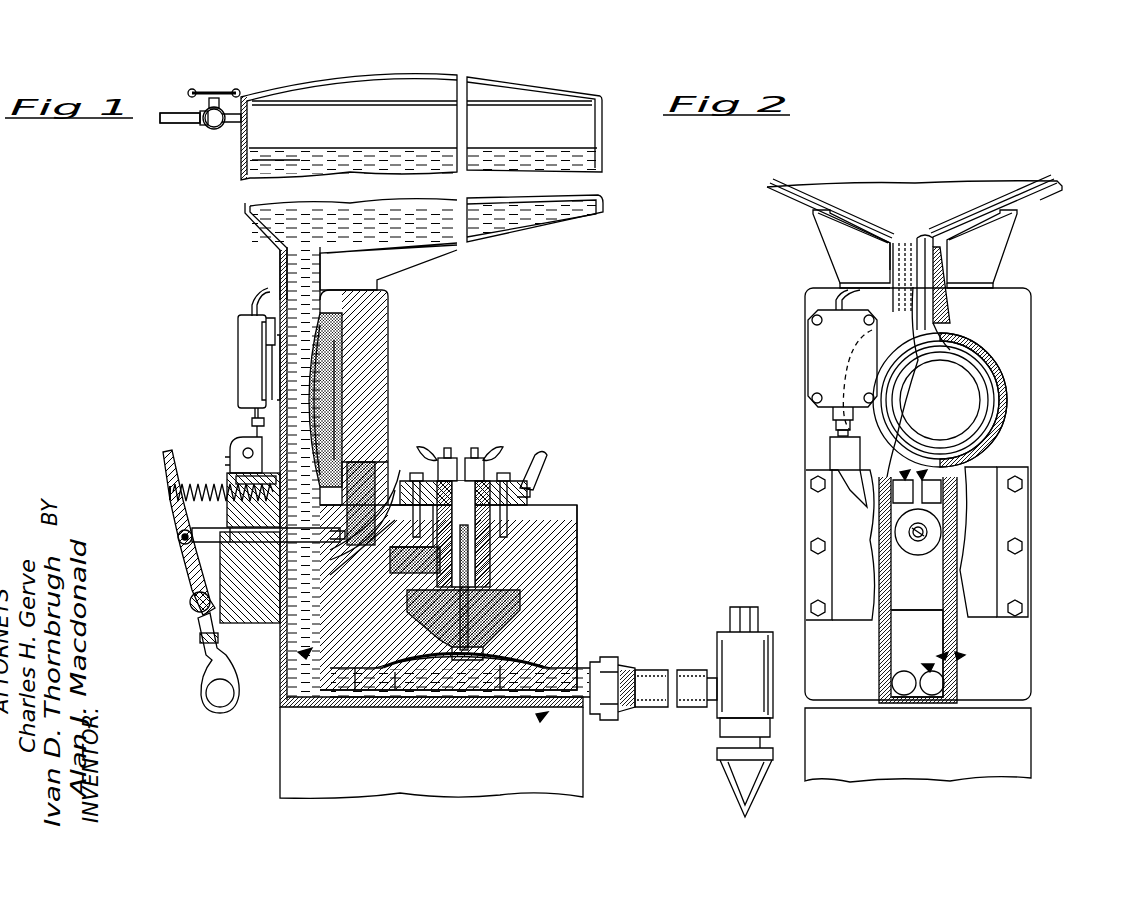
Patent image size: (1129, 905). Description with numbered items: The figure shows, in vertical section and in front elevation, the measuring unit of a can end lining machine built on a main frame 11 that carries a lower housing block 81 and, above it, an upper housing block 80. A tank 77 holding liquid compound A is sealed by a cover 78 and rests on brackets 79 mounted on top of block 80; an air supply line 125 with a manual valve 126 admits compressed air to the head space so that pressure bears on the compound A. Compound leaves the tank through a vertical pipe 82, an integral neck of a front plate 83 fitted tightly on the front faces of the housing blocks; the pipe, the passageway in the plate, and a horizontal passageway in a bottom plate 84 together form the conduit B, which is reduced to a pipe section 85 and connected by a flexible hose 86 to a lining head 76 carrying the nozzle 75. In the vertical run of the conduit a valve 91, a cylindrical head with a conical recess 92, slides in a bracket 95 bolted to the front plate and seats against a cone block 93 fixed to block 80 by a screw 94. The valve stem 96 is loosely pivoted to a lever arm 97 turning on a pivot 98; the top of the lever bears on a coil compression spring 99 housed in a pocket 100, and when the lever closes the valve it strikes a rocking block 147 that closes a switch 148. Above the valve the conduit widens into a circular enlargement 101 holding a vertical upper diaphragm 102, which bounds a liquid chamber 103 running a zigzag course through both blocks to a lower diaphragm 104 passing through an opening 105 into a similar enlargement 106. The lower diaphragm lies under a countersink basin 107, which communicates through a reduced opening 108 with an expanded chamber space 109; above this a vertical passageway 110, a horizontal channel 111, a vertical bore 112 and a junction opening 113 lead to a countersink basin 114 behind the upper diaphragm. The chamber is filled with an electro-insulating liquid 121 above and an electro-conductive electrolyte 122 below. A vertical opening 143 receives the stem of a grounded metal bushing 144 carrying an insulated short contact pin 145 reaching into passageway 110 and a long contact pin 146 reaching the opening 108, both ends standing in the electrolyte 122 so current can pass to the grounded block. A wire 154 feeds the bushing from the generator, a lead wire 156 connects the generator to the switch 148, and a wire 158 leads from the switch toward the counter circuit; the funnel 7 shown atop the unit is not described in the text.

In FIG. 2, the funnel 7 is at (928, 200).
In FIG. 1, the main frame 11 is at (293, 765).
In FIG. 2, the main frame 11 is at (1000, 768).
In FIG. 1, the nozzle 75 is at (742, 783).
In FIG. 1, the lining head 76 is at (745, 683).
In FIG. 1, the tank 77 is at (600, 130).
In FIG. 1, the cover 78 is at (280, 93).
In FIG. 1, the brackets 79 is at (423, 253).
In FIG. 2, the brackets 79 is at (850, 254).
In FIG. 1, the upper housing block 80 is at (378, 316).
In FIG. 2, the upper housing block 80 is at (903, 575).
In FIG. 1, the lower housing block 81 is at (560, 635).
In FIG. 2, the lower housing block 81 is at (932, 632).
In FIG. 1, the pipe 82 is at (280, 270).
In FIG. 2, the pipe 82 is at (940, 275).
In FIG. 1, the front plate 83 is at (283, 692).
In FIG. 2, the front plate 83 is at (1010, 322).
In FIG. 1, the bottom plate 84 is at (450, 708).
In FIG. 2, the bottom plate 84 is at (915, 670).
In FIG. 1, the pipe section 85 is at (603, 708).
In FIG. 1, the flexible hose 86 is at (652, 680).
In FIG. 1, the valve 91 is at (190, 590).
In FIG. 1, the conical recess 92 is at (175, 520).
In FIG. 1, the cone block 93 is at (355, 500).
In FIG. 2, the cone block 93 is at (916, 555).
In FIG. 1, the screw 94 is at (360, 520).
In FIG. 2, the screw 94 is at (930, 546).
In FIG. 1, the bracket 95 is at (247, 622).
In FIG. 2, the bracket 95 is at (1000, 522).
In FIG. 1, the stem 96 is at (178, 545).
In FIG. 1, the lever arm 97 is at (240, 543).
In FIG. 2, the lever arm 97 is at (840, 455).
In FIG. 1, the pivot 98 is at (200, 605).
In FIG. 1, the coil compression spring 99 is at (203, 485).
In FIG. 1, the pocket 100 is at (222, 510).
In FIG. 1, the circular enlargement 101 is at (312, 332).
In FIG. 2, the circular enlargement 101 is at (1012, 388).
In FIG. 1, the upper diaphragm 102 is at (312, 360).
In FIG. 2, the upper diaphragm 102 is at (918, 382).
In FIG. 1, the liquid chamber 103 is at (345, 370).
In FIG. 1, the lower diaphragm 104 is at (500, 670).
In FIG. 1, the opening 105 is at (397, 690).
In FIG. 1, the circular enlargement 106 is at (385, 690).
In FIG. 1, the countersink basin 107 is at (560, 660).
In FIG. 1, the reduced diameter opening 108 is at (495, 625).
In FIG. 1, the expanded chamber space 109 is at (505, 600).
In FIG. 1, the vertical passageway 110 is at (520, 550).
In FIG. 1, the horizontal channel 111 is at (386, 495).
In FIG. 1, the vertical bore 112 is at (378, 478).
In FIG. 1, the junction opening 113 is at (360, 470).
In FIG. 1, the countersink basin 114 is at (345, 355).
In FIG. 1, the electro-insulating liquid 121 is at (334, 400).
In FIG. 1, the electro-conductive liquid 122 is at (475, 580).
In FIG. 1, the air supply line 125 is at (166, 124).
In FIG. 1, the valve 126 is at (208, 124).
In FIG. 1, the vertical opening 143 is at (515, 505).
In FIG. 1, the metal bushing 144 is at (505, 473).
In FIG. 1, the short contact pin 145 is at (448, 448).
In FIG. 1, the long contact pin 146 is at (485, 448).
In FIG. 1, the rocking block 147 is at (262, 438).
In FIG. 2, the rocking block 147 is at (838, 435).
In FIG. 1, the switch 148 is at (250, 362).
In FIG. 2, the switch 148 is at (842, 370).
In FIG. 1, the wire 154 is at (544, 458).
In FIG. 1, the lead wire 156 is at (248, 287).
In FIG. 2, the lead wire 156 is at (850, 300).
In FIG. 1, the wire 158 is at (247, 304).
In FIG. 2, the wire 158 is at (834, 300).
In FIG. 1, the compound A is at (258, 162).
In FIG. 1, the conduit B is at (300, 654).
In FIG. 2, the conduit B is at (922, 478).